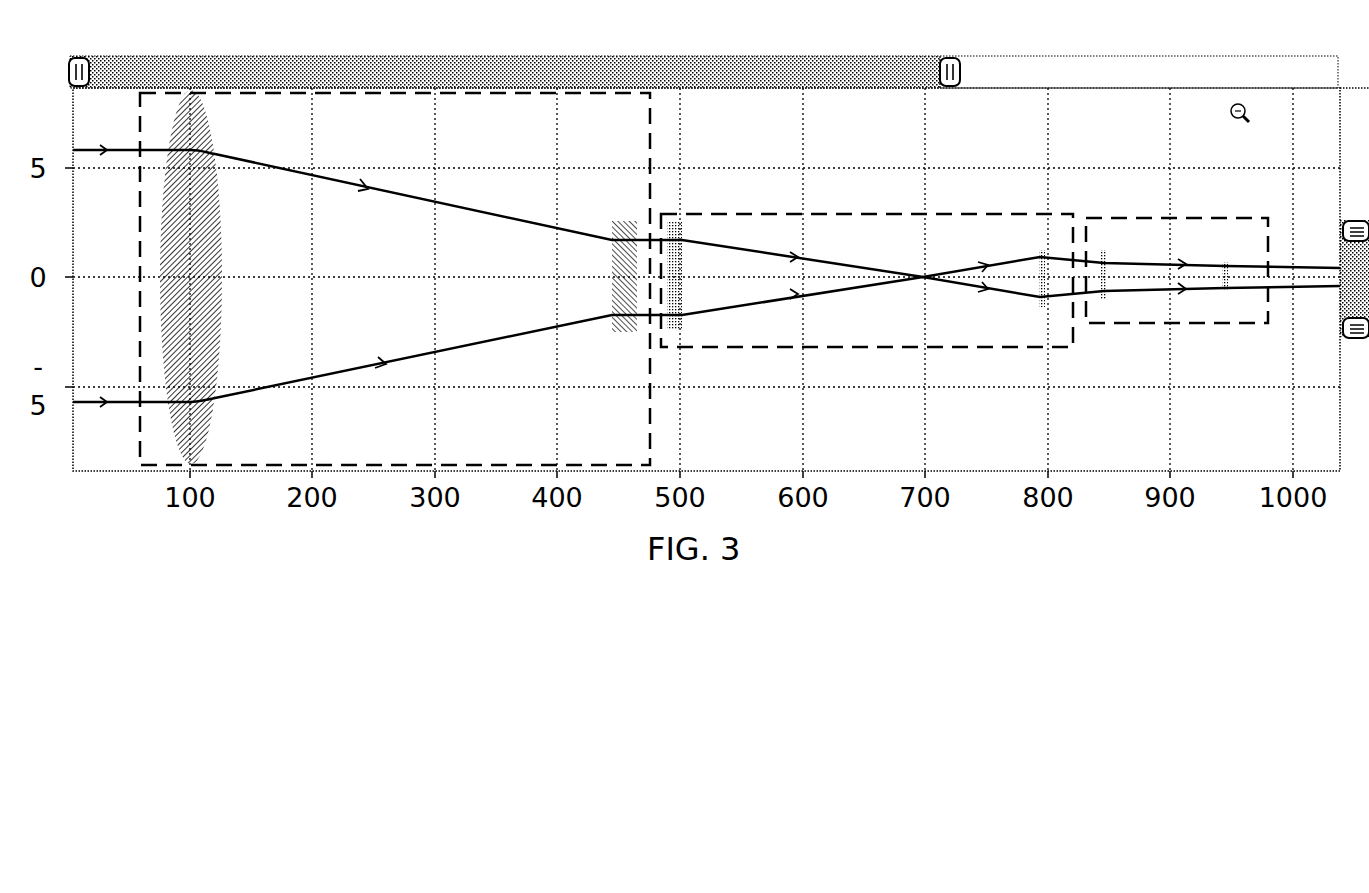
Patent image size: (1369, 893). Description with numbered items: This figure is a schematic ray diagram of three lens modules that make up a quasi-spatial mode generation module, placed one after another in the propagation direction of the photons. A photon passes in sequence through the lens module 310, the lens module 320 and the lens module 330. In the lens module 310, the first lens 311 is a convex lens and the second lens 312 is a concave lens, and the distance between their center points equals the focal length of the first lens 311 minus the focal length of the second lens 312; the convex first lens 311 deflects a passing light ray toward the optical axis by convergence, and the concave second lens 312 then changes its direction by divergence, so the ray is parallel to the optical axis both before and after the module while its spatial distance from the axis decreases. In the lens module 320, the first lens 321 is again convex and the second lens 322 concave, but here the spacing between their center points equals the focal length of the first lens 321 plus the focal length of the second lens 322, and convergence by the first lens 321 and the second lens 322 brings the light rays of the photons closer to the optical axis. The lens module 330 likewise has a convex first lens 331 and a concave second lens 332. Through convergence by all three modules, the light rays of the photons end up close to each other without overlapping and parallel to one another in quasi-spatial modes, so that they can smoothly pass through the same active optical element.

The first optical module (beam expansion section) 310 is at (650, 125).
The lens 311 is at (218, 238).
The optical element (aperture/filter) 312 is at (612, 262).
The second optical module (focusing section) 320 is at (850, 214).
The optical element 321 is at (682, 320).
The optical element 322 is at (1040, 303).
The third optical module (output section) 330 is at (1155, 218).
The optical element 331 is at (1104, 297).
The optical element 332 is at (1225, 286).